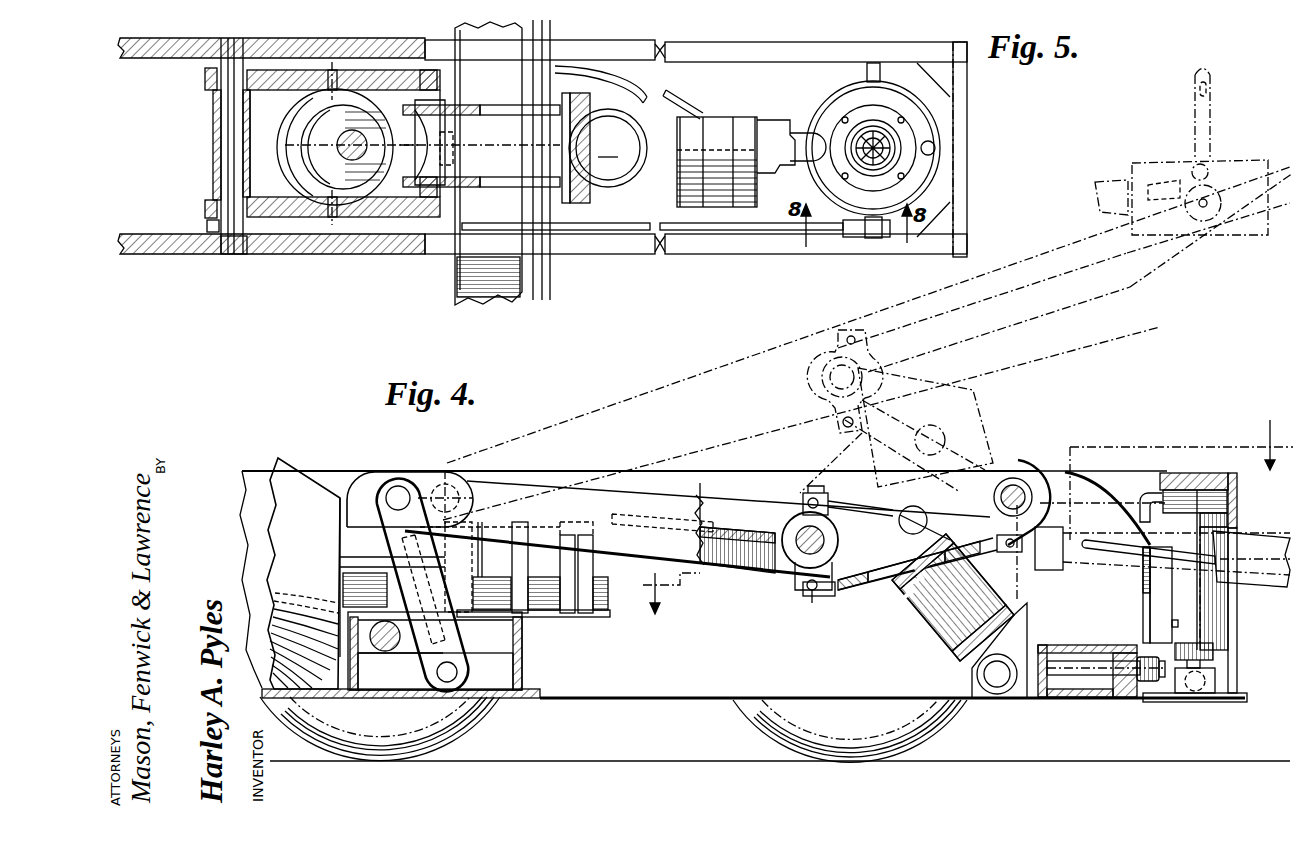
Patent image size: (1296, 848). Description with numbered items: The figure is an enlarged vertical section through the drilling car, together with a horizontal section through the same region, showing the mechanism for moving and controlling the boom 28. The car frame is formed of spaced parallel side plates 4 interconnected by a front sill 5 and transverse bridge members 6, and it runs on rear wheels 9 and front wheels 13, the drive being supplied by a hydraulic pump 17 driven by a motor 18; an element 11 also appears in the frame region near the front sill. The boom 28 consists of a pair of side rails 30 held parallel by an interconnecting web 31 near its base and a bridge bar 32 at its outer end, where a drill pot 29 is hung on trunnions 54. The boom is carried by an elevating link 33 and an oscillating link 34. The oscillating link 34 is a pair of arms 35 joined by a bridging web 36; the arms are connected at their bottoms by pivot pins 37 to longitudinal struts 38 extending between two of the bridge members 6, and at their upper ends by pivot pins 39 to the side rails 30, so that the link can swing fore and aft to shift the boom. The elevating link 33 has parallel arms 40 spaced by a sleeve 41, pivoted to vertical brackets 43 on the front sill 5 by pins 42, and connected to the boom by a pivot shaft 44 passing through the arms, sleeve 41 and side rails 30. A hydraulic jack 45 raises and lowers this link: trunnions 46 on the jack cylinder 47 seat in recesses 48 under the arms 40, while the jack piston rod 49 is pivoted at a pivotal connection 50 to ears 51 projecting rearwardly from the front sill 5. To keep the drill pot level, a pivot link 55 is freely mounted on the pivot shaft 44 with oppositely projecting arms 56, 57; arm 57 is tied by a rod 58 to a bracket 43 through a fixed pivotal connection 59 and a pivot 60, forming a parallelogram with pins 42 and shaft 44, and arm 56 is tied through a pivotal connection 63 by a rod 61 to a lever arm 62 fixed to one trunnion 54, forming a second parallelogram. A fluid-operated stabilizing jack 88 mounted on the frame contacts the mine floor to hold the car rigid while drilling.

In FIG. 4, the side plates 4 is at (700, 690).
In FIG. 5, the front sill 5 is at (500, 296).
In FIG. 4, the front sill 5 is at (1078, 645).
In FIG. 4, the transverse bridge members 6 is at (523, 636).
In FIG. 4, the rear wheels 9 is at (475, 725).
In FIG. 5, the shaft 11 is at (490, 145).
In FIG. 4, the shaft 11 is at (1060, 688).
In FIG. 4, the front wheels 13 is at (940, 728).
In FIG. 4, the hydraulic pump 17 is at (594, 583).
In FIG. 4, the motor 18 is at (298, 485).
In FIG. 5, the boom 28 is at (750, 40).
In FIG. 5, the drill pot 29 is at (818, 112).
In FIG. 5, the side rails 30 is at (160, 60).
In FIG. 4, the side rails 30 is at (648, 492).
In FIG. 4, the interconnecting web 31 is at (740, 527).
In FIG. 5, the bridge bar 32 is at (960, 160).
In FIG. 4, the elevating link 33 is at (852, 485).
In FIG. 4, the oscillating link 34 is at (400, 532).
In FIG. 4, the arms 35 is at (445, 630).
In FIG. 4, the bridging web 36 is at (475, 569).
In FIG. 4, the pivot pins 37 is at (447, 682).
In FIG. 4, the longitudinal struts 38 is at (497, 670).
In FIG. 4, the pivot pins 39 is at (445, 484).
In FIG. 5, the arms 40 is at (206, 76).
In FIG. 4, the arms 40 is at (848, 590).
In FIG. 5, the sleeve 41 is at (212, 165).
In FIG. 5, the pins 42 is at (427, 165).
In FIG. 4, the pins 42 is at (1022, 478).
In FIG. 5, the vertical brackets 43 is at (495, 105).
In FIG. 4, the vertical brackets 43 is at (1090, 490).
In FIG. 5, the pivot shaft 44 is at (236, 254).
In FIG. 4, the pivot shaft 44 is at (795, 540).
In FIG. 5, the hydraulic jack 45 is at (292, 148).
In FIG. 4, the hydraulic jack 45 is at (905, 600).
In FIG. 5, the trunnions 46 is at (334, 68).
In FIG. 4, the trunnions 46 is at (953, 438).
In FIG. 4, the jack cylinder 47 is at (915, 632).
In FIG. 4, the recesses 48 is at (884, 580).
In FIG. 4, the jack piston rod 49 is at (945, 640).
In FIG. 4, the pivotal connection 50 is at (997, 688).
In FIG. 4, the ears 51 is at (1020, 650).
In FIG. 5, the trunnions 54 is at (866, 73).
In FIG. 5, the pivot link 55 is at (206, 225).
In FIG. 4, the pivot link 55 is at (818, 597).
In FIG. 4, the arm 56 is at (814, 490).
In FIG. 4, the arm 57 is at (805, 585).
In FIG. 4, the rod 58 is at (868, 600).
In FIG. 4, the pivotal connection 59 is at (1025, 532).
In FIG. 4, the pivot 60 is at (806, 597).
In FIG. 5, the rod 61 is at (628, 228).
In FIG. 4, the rod 61 is at (1197, 552).
In FIG. 5, the lever arm 62 is at (1222, 222).
In FIG. 4, the pivotal connection 63 is at (803, 498).
In FIG. 5, the stabilizing jacks 88 is at (604, 148).
In FIG. 4, the stabilizing jacks 88 is at (1230, 617).